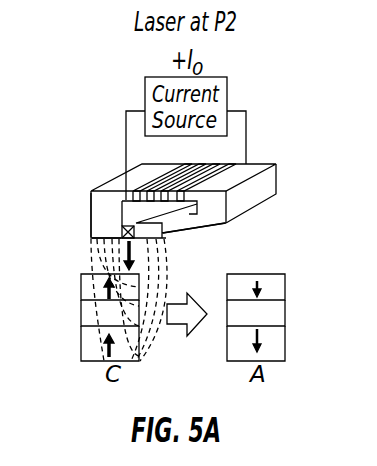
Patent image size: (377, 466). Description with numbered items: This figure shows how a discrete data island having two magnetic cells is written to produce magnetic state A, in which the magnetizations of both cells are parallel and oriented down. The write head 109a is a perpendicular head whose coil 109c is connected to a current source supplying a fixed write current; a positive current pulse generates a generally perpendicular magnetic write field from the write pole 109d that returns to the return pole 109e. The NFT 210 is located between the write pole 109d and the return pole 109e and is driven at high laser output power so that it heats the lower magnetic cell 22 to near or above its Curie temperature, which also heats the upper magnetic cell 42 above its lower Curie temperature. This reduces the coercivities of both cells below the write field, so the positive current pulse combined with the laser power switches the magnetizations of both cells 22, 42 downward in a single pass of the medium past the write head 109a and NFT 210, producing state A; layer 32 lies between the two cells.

The write head 109a is at (260, 163).
The coil 109c is at (152, 176).
The NFT 210 is at (125, 226).
The return pole 109e is at (100, 220).
The write pole 109d is at (187, 227).
The upper magnetic cell 42 is at (82, 283).
The spacer layer 32 is at (82, 313).
The lower magnetic cell 22 is at (82, 341).